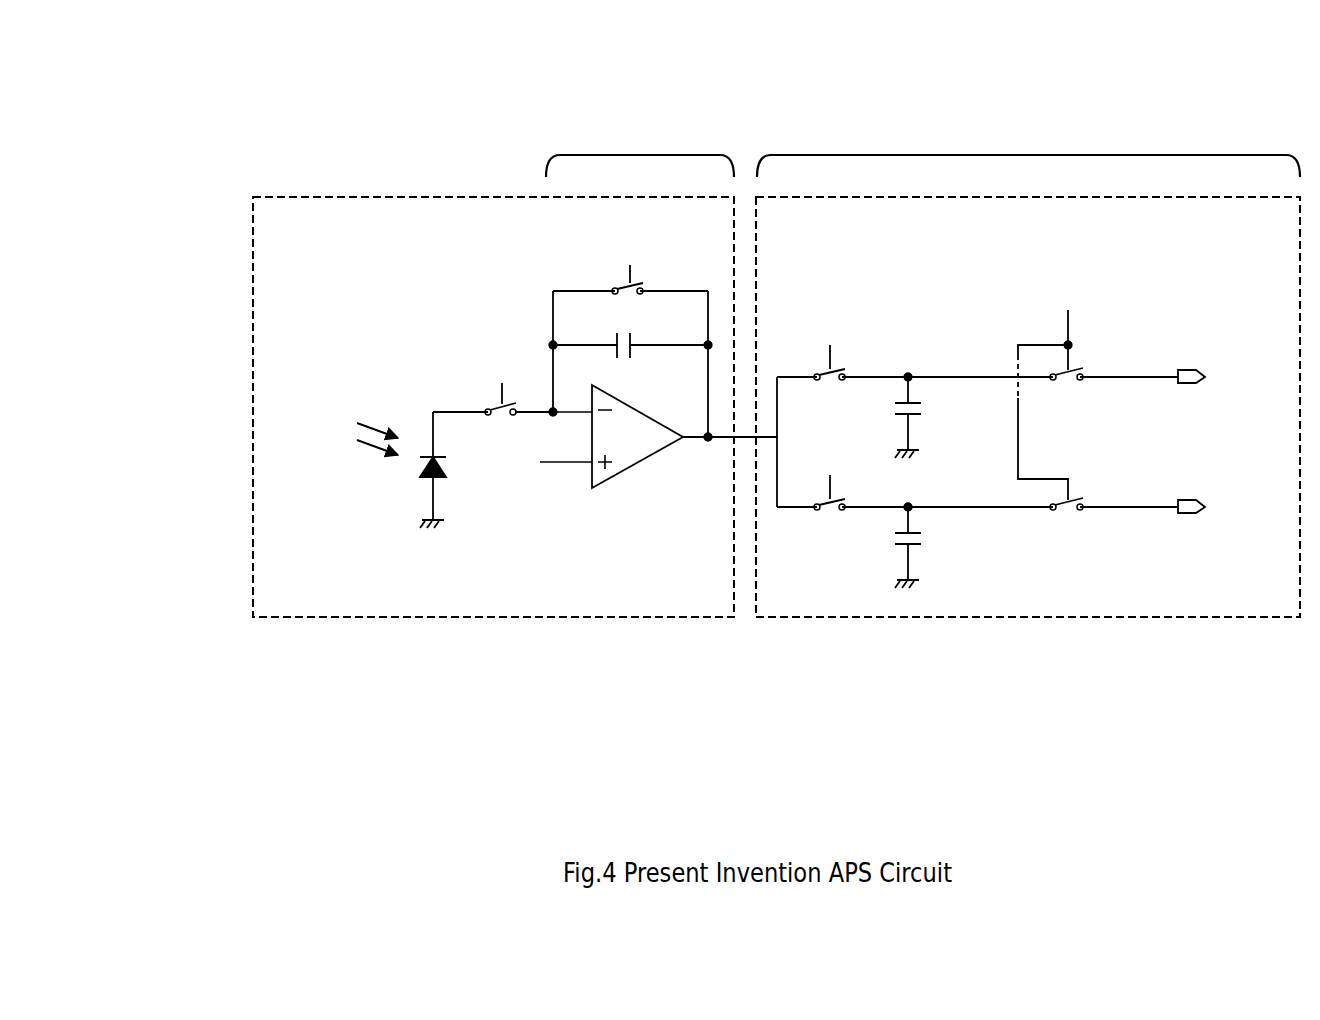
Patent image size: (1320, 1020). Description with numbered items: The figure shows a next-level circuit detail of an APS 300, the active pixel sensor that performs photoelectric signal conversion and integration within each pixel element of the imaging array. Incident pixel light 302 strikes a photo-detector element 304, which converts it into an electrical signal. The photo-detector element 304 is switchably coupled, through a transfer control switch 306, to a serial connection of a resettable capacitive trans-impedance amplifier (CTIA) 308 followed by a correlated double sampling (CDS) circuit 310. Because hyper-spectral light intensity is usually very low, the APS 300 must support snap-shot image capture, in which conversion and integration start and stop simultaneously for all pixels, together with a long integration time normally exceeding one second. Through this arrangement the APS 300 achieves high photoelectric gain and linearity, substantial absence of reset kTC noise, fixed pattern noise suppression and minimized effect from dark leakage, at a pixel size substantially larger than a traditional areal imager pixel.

The APS 300 is at (212, 128).
The incident pixel light 302 is at (353, 433).
The photo-detector element 304 is at (427, 482).
The transfer control switch 306 is at (502, 400).
The resettable capacitive trans-impedance amplifier (CTIA) 308 is at (662, 155).
The correlated double sampling (CDS) circuit 310 is at (1010, 155).